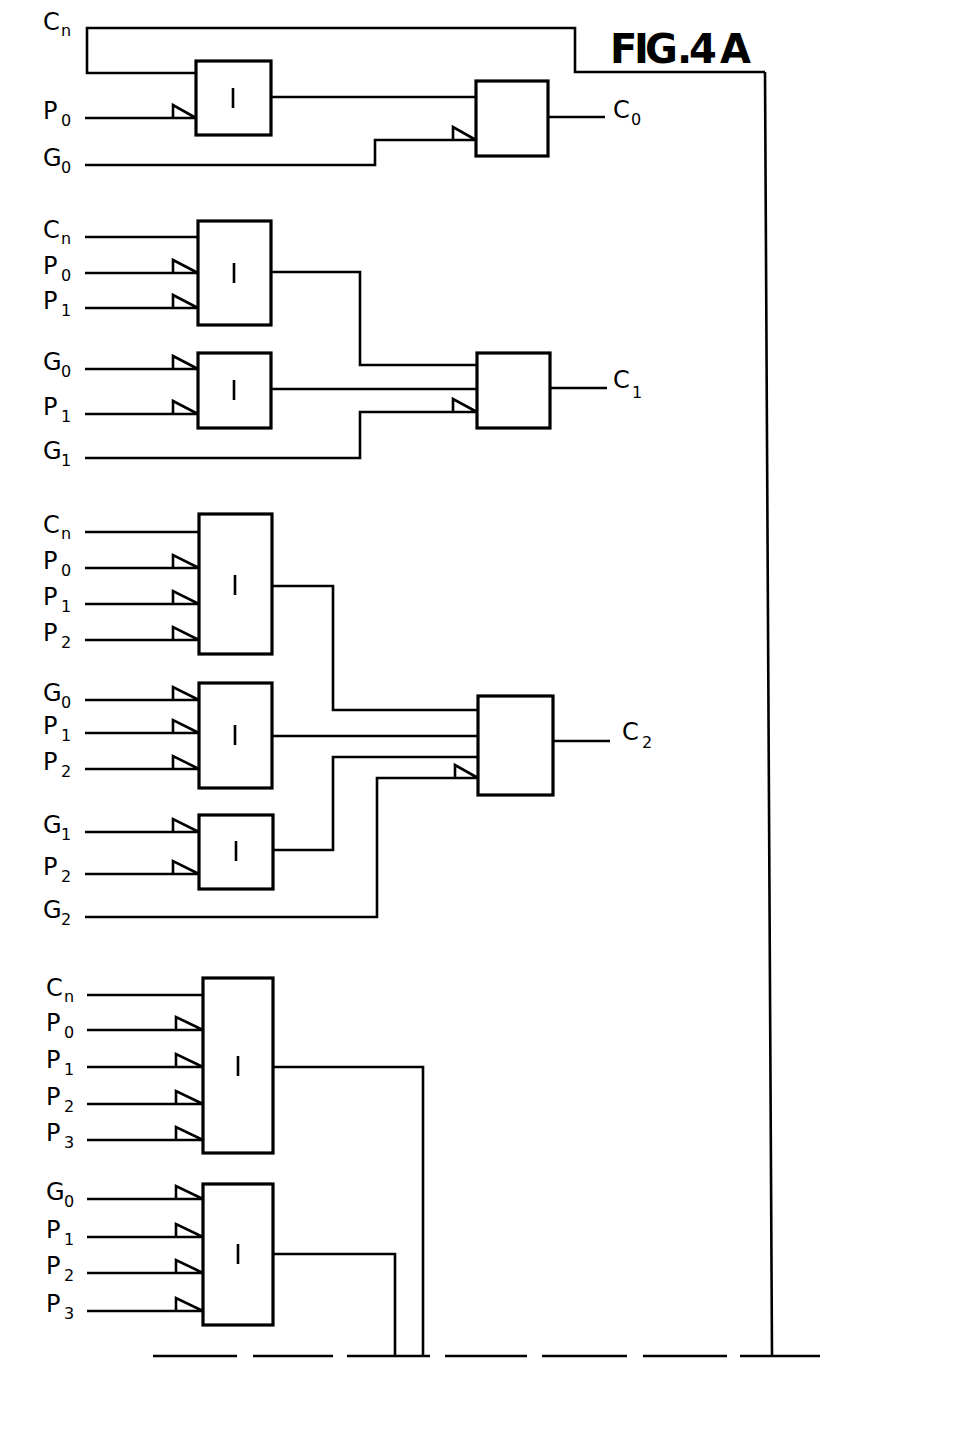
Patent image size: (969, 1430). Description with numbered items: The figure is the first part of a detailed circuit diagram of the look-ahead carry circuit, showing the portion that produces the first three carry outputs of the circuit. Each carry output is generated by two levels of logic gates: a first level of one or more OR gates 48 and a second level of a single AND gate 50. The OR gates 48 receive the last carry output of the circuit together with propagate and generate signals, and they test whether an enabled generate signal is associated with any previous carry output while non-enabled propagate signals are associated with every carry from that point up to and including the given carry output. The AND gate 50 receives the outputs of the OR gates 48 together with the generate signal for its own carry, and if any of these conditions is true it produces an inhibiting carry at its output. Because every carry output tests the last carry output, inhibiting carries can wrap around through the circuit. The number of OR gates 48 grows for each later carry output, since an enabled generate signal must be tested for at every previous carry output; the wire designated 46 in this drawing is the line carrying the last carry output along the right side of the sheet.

The OR gate 48 is at (320, 1188).
The AND gate 50 is at (523, 635).
The carry look-ahead circuit boundary 46 is at (486, 714).